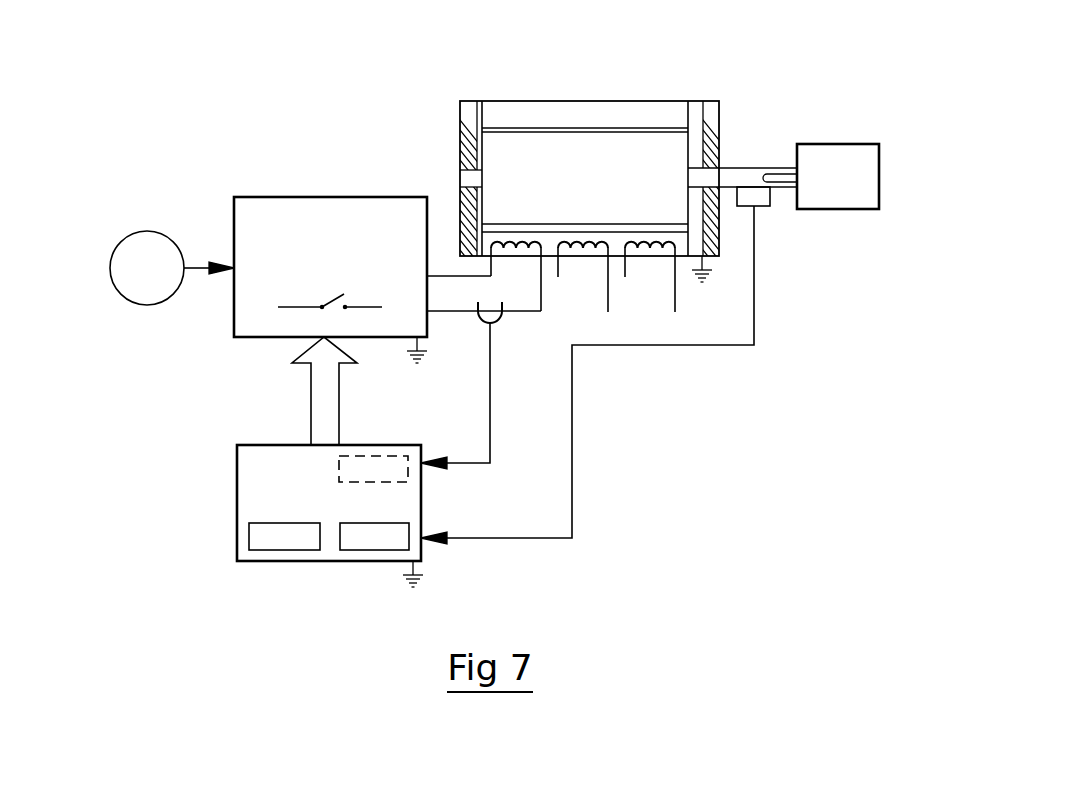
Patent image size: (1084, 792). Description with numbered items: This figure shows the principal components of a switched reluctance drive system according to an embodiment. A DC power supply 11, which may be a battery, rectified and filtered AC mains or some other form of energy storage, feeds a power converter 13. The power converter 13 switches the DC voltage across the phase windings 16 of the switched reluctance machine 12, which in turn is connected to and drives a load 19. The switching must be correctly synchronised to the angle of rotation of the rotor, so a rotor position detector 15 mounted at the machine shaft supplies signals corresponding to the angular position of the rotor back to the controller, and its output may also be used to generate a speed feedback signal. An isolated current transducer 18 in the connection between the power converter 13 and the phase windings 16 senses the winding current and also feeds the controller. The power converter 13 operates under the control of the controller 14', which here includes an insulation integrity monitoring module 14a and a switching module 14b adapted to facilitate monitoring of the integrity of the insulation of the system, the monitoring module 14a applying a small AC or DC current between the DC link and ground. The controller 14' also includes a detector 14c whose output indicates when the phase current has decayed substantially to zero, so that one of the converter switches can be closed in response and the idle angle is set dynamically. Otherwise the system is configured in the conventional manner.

The DC power supply 11 is at (145, 228).
The switched reluctance machine 12 is at (552, 100).
The power converter 13 is at (278, 197).
The controller 14' is at (286, 516).
The insulation integrity monitoring module 14a is at (284, 536).
The switching module 14b is at (374, 536).
The detector 14c is at (373, 469).
The rotor position detector 15 is at (752, 198).
The phase windings 16 is at (507, 240).
The current transducer 18 is at (503, 318).
The load 19 is at (810, 153).